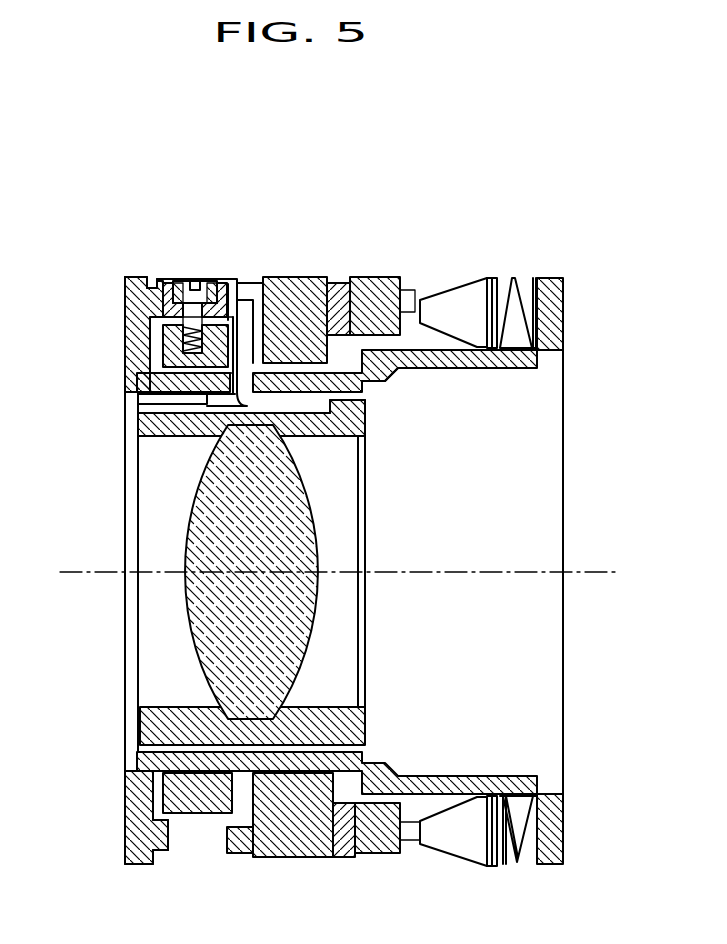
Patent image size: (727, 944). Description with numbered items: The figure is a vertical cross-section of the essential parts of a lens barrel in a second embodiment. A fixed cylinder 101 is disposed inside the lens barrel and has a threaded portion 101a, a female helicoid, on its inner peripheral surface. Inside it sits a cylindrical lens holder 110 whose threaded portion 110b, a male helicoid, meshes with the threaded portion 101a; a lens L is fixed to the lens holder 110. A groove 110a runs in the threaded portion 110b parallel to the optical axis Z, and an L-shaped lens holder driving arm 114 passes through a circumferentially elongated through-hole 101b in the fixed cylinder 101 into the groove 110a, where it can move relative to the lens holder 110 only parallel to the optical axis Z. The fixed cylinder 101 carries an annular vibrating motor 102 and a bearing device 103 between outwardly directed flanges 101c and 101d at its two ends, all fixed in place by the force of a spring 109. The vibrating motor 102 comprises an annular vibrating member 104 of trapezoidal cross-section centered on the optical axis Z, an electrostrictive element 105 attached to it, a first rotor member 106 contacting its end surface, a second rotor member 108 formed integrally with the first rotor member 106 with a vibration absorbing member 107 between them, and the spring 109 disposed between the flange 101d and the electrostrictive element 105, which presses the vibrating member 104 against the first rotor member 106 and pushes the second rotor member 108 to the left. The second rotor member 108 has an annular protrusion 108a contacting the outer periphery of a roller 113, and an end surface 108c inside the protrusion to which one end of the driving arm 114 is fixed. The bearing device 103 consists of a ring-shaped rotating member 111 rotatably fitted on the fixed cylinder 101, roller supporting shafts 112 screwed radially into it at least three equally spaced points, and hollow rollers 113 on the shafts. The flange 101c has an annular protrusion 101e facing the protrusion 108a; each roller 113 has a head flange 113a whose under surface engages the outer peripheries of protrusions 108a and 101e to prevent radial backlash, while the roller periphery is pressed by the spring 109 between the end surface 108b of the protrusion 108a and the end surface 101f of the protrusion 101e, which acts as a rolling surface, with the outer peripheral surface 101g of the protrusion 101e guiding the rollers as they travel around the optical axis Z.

The fixed cylinder 101 is at (523, 367).
The threaded portion 101a is at (387, 380).
The through-hole 101b is at (130, 503).
The flange 101c is at (133, 333).
The flange 101d is at (553, 323).
The annular protrusion 101e is at (122, 278).
The end surface 101f is at (172, 840).
The outer peripheral surface 101g is at (162, 852).
The vibrating motor 102 is at (590, 216).
The bearing device 103 is at (160, 349).
The vibrating member 104 is at (430, 297).
The electrostrictive element 105 is at (488, 282).
The first rotor member 106 is at (380, 290).
The vibration absorbing member 107 is at (340, 290).
The second rotor member 108 is at (295, 290).
The annular protrusion 108a is at (243, 287).
The end surface 108b is at (220, 856).
The end surface 108c is at (293, 858).
The spring 109 is at (513, 278).
The lens holder 110 is at (148, 442).
The groove 110a is at (363, 410).
The threaded portion 110b is at (363, 475).
The rotating member 111 is at (160, 298).
The roller supporting shaft 112 is at (196, 277).
The roller 113 is at (158, 277).
The flange 113a is at (162, 282).
The lens holder driving arm 114 is at (143, 420).
The lens L is at (205, 628).
The optical axis Z is at (595, 578).